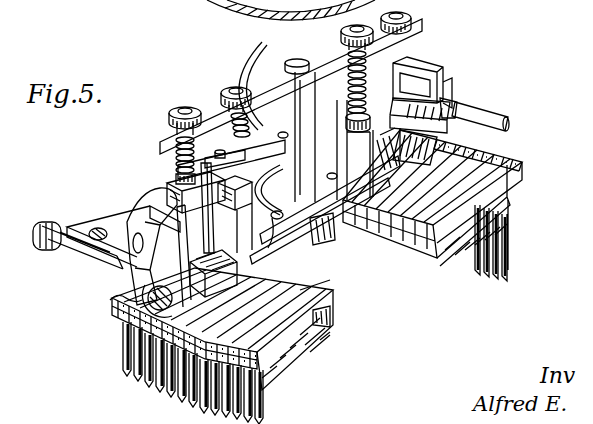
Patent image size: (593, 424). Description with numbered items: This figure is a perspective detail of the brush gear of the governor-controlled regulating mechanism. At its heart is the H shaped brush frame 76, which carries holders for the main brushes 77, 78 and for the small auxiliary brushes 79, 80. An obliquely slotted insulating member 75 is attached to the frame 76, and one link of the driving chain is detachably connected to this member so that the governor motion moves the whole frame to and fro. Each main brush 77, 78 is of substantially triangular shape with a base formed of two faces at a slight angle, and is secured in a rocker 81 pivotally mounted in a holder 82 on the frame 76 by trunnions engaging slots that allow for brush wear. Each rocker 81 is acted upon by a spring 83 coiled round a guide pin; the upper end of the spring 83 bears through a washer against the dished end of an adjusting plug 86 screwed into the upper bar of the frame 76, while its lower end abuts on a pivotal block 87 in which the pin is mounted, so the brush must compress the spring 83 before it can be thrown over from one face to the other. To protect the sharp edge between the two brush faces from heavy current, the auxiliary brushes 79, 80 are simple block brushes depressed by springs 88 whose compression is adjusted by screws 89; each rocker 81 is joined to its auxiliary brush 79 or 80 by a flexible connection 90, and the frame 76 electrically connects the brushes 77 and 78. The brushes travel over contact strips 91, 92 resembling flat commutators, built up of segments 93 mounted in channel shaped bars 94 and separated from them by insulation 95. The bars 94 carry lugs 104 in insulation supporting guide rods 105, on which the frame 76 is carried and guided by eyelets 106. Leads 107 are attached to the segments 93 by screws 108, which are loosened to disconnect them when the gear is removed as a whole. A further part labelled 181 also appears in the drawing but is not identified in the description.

The obliquely slotted insulating member 75 is at (313, 247).
The H shaped brush frame 76 is at (297, 80).
The main brush 77 is at (213, 273).
The main brush 78 is at (415, 147).
The auxiliary brush 79 is at (276, 246).
The auxiliary brush 80 is at (338, 230).
The rocker 81 is at (444, 80).
The holder 82 is at (125, 222).
The spring 83 is at (176, 157).
The adjusting plug 86 is at (184, 110).
The pivotal block 87 is at (413, 69).
The spring 88 is at (258, 60).
The screw 89 is at (234, 87).
The flexible connection 90 is at (400, 128).
The contact strip 91 is at (318, 285).
The contact strip 92 is at (490, 182).
The segment 93 is at (471, 252).
The channel shaped bar 94 is at (323, 340).
The insulation 95 is at (330, 320).
The lug 104 is at (47, 225).
The guide rod 105 is at (507, 120).
The eyelet 106 is at (122, 302).
The lead 107 is at (123, 337).
The screw 108 is at (203, 373).
The bracket 181 is at (156, 214).